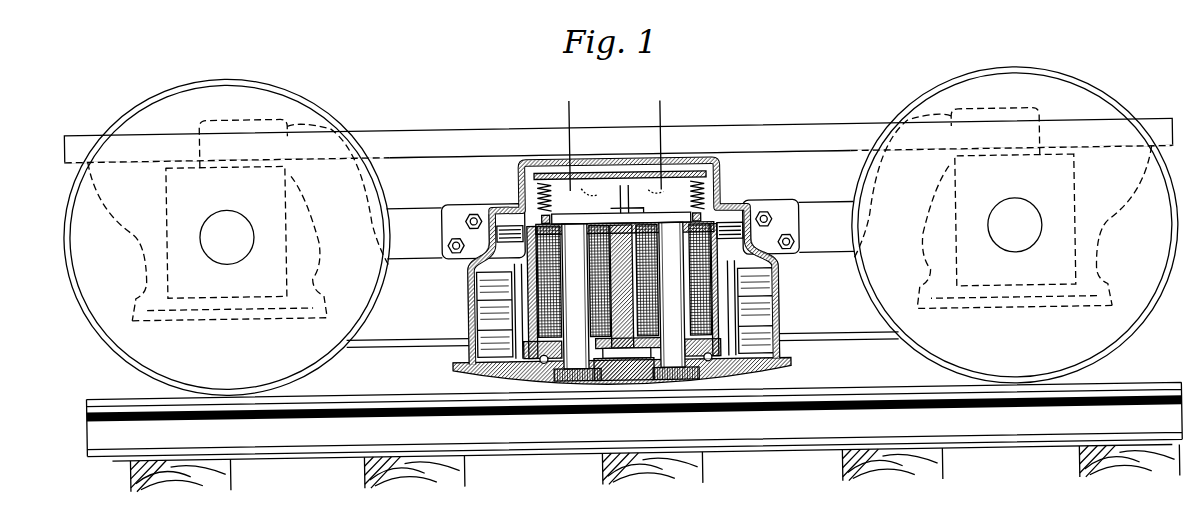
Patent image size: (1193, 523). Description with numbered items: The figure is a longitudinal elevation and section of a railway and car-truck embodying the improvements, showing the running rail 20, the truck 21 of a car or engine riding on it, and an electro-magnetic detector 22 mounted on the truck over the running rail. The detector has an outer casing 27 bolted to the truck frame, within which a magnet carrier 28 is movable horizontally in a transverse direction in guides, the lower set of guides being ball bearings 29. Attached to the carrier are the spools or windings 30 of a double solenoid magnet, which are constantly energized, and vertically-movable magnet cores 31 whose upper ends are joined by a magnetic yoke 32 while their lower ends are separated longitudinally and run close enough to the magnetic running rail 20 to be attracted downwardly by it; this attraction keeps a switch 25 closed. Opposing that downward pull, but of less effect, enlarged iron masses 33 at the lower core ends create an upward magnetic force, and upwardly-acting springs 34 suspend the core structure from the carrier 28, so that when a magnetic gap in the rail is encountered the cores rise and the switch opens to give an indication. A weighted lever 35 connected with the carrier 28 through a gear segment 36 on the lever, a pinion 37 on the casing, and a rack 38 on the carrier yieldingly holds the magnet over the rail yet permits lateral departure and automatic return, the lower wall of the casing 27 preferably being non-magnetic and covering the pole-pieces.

The running rail 20 is at (806, 448).
The truck 21 is at (851, 127).
The electro-magnetic detector 22 is at (741, 207).
The switch 25 is at (623, 192).
The outer casing 27 is at (779, 300).
The magnet carrier 28 is at (519, 197).
The ball bearings 29 is at (533, 385).
The spools or windings 30 is at (550, 292).
The magnet cores 31 is at (576, 357).
The magnetic yoke 32 is at (688, 159).
The enlarged iron masses 33 is at (580, 380).
The springs 34 is at (548, 182).
The weighted lever 35 is at (503, 282).
The gear segment 36 is at (495, 298).
The pinion 37 is at (518, 325).
The rack 38 is at (472, 367).